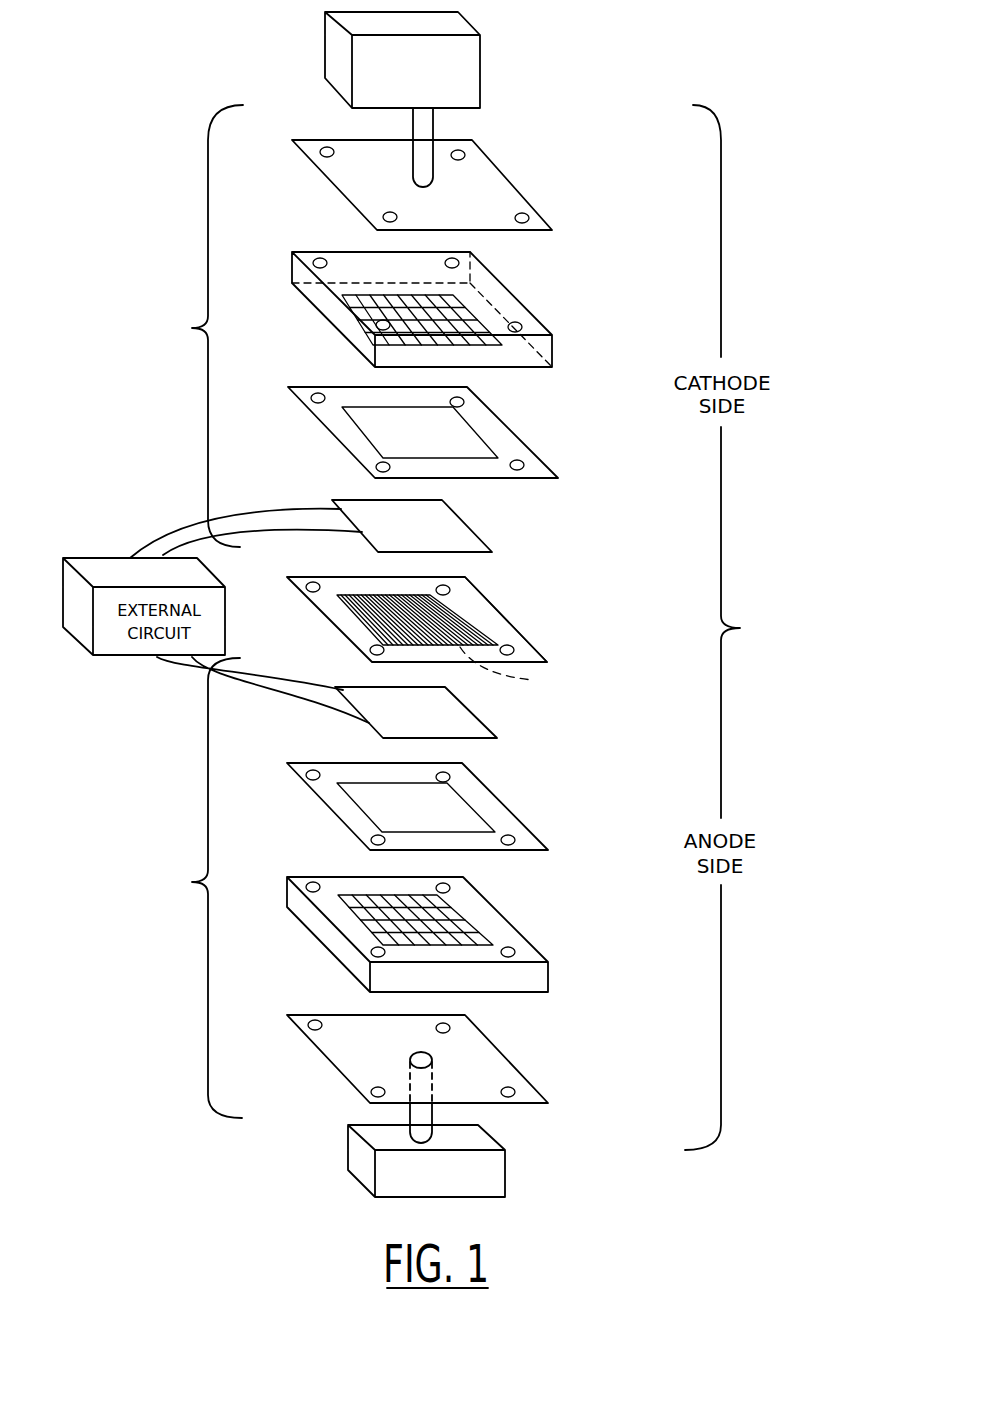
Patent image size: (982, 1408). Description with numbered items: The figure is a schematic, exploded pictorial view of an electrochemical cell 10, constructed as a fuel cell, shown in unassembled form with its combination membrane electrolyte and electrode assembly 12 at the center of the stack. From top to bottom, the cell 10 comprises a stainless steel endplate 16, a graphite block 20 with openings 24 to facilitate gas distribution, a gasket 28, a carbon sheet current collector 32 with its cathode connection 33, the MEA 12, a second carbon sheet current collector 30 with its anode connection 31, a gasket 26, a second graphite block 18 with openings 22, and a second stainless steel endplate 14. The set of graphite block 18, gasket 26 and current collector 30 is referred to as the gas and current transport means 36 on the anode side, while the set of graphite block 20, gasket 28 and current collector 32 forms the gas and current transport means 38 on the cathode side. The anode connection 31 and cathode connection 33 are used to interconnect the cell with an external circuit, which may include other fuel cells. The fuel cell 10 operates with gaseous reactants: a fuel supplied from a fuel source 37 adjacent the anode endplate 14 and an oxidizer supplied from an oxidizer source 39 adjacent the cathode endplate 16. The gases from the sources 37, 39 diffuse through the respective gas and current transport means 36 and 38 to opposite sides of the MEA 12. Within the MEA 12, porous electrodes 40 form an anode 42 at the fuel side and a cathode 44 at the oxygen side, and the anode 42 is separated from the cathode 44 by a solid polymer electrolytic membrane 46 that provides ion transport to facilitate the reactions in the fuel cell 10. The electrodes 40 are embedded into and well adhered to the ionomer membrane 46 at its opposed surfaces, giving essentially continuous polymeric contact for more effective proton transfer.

The electrochemical cell 10 is at (732, 627).
The membrane electrolyte and electrode assembly 12 is at (459, 628).
The stainless steel endplate 14 is at (502, 1050).
The stainless steel endplate 16 is at (510, 183).
The graphite block 18 is at (443, 926).
The graphite block 20 is at (458, 309).
The openings 22 is at (462, 917).
The openings 24 is at (453, 317).
The gasket 26 is at (510, 808).
The gasket 28 is at (513, 432).
The carbon sheet current collector 30 is at (485, 740).
The anode connection 31 is at (285, 707).
The carbon sheet current collector 32 is at (475, 530).
The cathode connection 33 is at (274, 523).
The gas and current transport means 36 is at (194, 888).
The fuel source 37 is at (505, 1163).
The gas and current transport means 38 is at (192, 326).
The oxidizer source 39 is at (482, 72).
The porous electrodes 40 is at (484, 628).
The anode 42 is at (545, 671).
The cathode 44 is at (455, 613).
The solid polymer electrolytic membrane 46 is at (533, 643).